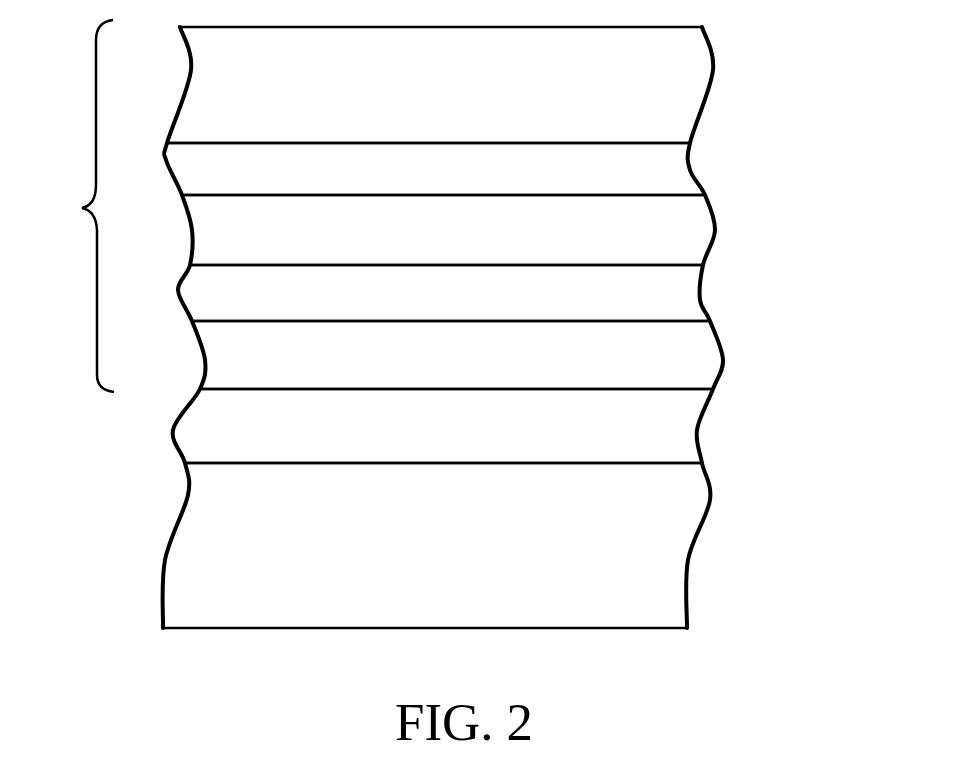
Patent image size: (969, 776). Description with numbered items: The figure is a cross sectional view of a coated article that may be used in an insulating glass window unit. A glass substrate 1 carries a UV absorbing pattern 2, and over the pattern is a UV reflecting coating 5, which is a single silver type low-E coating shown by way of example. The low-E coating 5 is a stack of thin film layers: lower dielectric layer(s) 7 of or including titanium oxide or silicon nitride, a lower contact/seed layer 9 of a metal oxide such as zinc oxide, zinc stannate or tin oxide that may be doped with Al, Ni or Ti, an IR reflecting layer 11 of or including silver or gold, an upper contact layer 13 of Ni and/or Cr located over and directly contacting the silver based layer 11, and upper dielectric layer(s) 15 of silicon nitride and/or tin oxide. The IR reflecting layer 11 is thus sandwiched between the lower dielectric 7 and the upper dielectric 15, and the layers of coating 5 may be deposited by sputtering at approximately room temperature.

The glass substrate 1 is at (680, 552).
The UV absorbing pattern 2 is at (682, 432).
The UV reflecting coating 5 is at (82, 208).
The lower dielectric layer(s) 7 is at (695, 365).
The lower contact/seed layer 9 is at (690, 300).
The IR reflecting layer 11 is at (698, 230).
The upper contact layer 13 is at (673, 170).
The upper dielectric layer(s) 15 is at (692, 88).